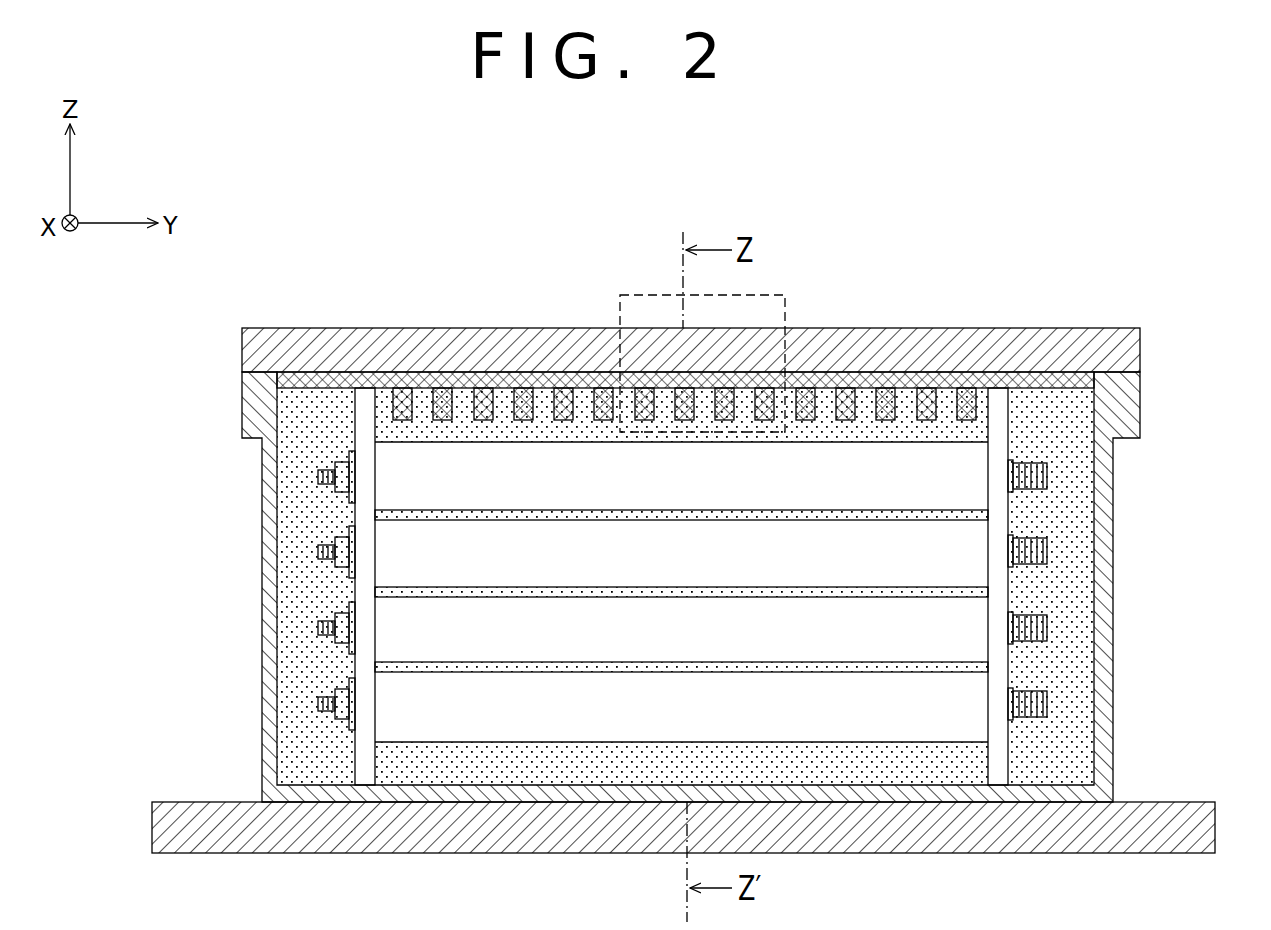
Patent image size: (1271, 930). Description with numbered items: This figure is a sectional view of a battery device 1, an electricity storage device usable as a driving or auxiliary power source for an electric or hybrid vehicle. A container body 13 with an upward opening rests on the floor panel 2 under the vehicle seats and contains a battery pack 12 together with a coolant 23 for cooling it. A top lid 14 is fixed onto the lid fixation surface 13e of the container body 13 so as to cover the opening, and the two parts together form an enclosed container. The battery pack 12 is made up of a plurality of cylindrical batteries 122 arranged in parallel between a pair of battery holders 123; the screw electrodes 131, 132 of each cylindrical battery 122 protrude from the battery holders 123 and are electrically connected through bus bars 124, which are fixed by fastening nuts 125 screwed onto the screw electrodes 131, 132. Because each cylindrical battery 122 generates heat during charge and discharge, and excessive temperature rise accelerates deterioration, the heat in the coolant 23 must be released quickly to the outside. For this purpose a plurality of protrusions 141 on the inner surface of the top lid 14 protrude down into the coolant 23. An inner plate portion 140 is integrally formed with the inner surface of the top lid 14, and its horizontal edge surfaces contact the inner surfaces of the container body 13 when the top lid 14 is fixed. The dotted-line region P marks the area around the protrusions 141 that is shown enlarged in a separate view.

The power storage device 1 is at (1012, 178).
The floor panel 2 is at (1180, 802).
The battery pack 12 is at (1040, 587).
The container body 13 is at (1105, 625).
The lid fixation surface 13e is at (1140, 353).
The top lid 14 is at (1060, 334).
The coolant 23 is at (1085, 680).
The cylindrical battery 122 is at (972, 727).
The battery holder 123 is at (997, 422).
The bus bar 124 is at (352, 594).
The fastening nut 125 is at (352, 730).
The screw electrode 131 is at (318, 477).
The screw electrode 132 is at (1047, 480).
The inner plate portion 140 is at (343, 345).
The protrusion 141 is at (930, 372).
The region enclosed by the dotted line P is at (786, 322).